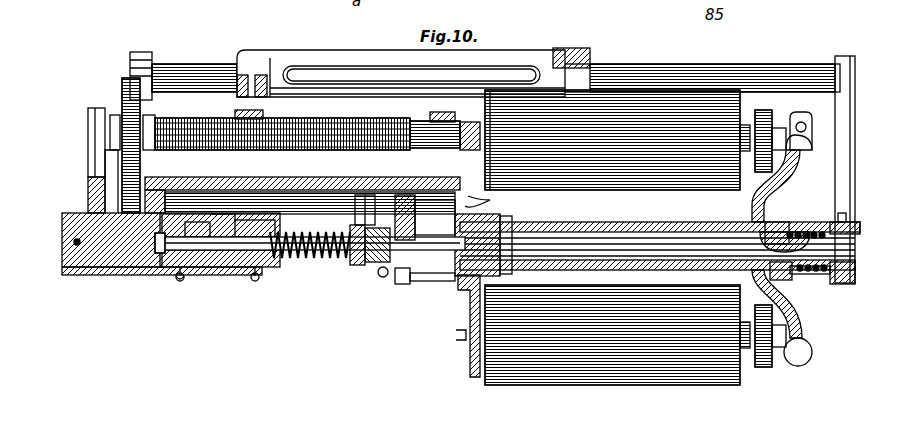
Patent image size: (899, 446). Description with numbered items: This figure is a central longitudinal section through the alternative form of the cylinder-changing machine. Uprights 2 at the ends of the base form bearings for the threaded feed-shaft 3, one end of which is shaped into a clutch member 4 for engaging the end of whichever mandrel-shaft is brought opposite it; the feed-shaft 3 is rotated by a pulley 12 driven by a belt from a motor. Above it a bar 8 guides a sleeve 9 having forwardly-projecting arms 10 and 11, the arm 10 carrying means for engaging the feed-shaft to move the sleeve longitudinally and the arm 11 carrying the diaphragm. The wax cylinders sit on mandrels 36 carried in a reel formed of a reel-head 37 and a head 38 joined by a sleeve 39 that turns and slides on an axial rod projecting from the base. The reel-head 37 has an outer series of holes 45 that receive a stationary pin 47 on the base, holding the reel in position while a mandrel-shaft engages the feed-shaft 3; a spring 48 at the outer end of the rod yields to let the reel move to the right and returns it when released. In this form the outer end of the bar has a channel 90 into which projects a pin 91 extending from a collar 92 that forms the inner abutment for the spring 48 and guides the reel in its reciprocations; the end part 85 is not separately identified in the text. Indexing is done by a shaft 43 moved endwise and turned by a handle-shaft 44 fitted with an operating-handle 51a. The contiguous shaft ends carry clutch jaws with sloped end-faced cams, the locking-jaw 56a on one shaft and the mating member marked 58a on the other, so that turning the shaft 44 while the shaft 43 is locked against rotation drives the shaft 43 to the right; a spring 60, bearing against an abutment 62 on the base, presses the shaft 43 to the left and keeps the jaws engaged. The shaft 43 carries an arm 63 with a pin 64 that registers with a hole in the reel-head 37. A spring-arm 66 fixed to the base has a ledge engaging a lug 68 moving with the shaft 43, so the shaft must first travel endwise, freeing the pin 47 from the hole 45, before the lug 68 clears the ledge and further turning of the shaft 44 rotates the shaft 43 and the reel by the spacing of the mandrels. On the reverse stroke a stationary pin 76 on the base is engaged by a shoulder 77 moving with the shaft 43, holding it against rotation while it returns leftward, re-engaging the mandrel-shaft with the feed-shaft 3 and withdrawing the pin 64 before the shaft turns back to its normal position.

The uprights 2 is at (88, 165).
The threaded feed-shaft 3 is at (350, 122).
The clutch member 4 is at (462, 124).
The bar 8 is at (190, 72).
The sleeve 9 is at (374, 62).
The arm 10 is at (401, 64).
The arm 11 is at (575, 50).
The pulley 12 is at (120, 95).
The mandrels 36 is at (648, 237).
The reel-head 37 is at (458, 292).
The head 38 is at (762, 244).
The sleeve 39 is at (604, 222).
The shaft 43 is at (208, 270).
The shaft 44 is at (136, 272).
The holes 45 is at (495, 202).
The stationary pin 47 is at (488, 198).
The spring 48 is at (820, 276).
The operating-handle 51a is at (72, 272).
The locking-jaw 56a is at (202, 276).
The screw 58a is at (258, 276).
The spring 60 is at (300, 270).
The abutment 62 is at (340, 268).
The arm 63 is at (395, 284).
The pin 64 is at (426, 282).
The spring-arm 66 is at (222, 208).
The lug 68 is at (262, 210).
The stationary pin 76 is at (400, 195).
The shoulder 77 is at (366, 195).
The stop 85 is at (848, 280).
The channel 90 is at (815, 222).
The pin 91 is at (784, 224).
The collar 92 is at (790, 272).